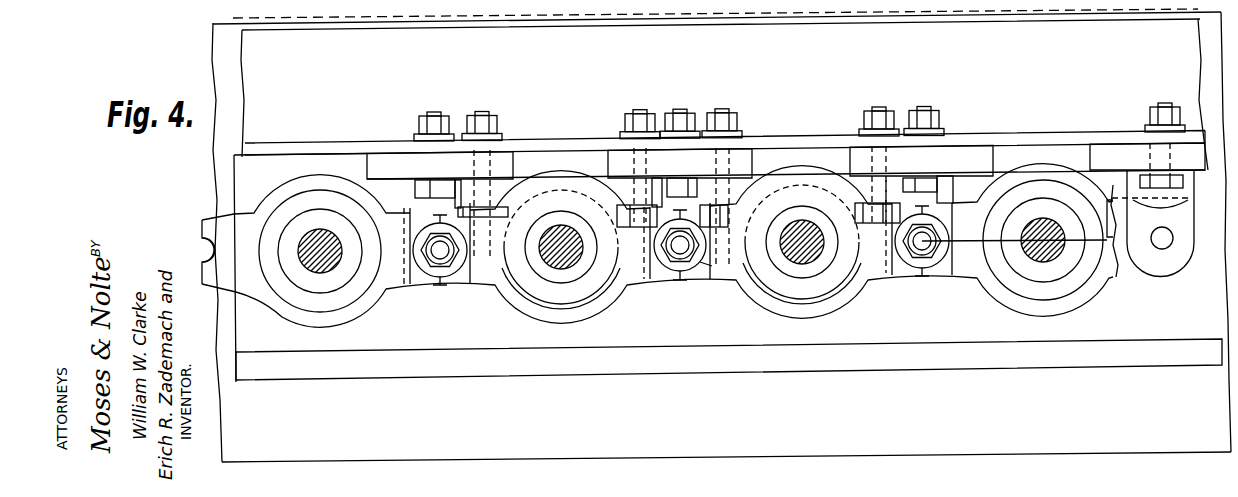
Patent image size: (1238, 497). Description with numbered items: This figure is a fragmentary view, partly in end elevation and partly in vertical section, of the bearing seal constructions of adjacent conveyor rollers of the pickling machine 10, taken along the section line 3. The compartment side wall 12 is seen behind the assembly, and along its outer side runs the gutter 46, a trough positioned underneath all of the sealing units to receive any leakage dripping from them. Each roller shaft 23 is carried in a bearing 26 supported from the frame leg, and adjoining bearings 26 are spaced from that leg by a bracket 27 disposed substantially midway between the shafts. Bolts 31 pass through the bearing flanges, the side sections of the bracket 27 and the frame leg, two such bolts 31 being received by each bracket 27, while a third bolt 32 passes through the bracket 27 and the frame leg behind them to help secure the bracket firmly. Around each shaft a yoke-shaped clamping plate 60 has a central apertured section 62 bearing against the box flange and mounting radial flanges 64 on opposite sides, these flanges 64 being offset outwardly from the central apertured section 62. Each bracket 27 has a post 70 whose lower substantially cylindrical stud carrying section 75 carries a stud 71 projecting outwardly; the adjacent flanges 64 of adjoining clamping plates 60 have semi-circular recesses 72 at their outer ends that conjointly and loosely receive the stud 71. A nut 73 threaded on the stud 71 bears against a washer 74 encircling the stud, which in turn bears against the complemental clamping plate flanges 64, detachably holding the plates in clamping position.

The section line 3- 3 is at (233, 18).
The pickling machine 10 is at (213, 318).
The side wall 12 is at (224, 444).
The roller shaft 23 is at (334, 262).
The bearing 26 is at (550, 292).
The bracket 27 is at (363, 165).
The bolt 31 is at (483, 115).
The third bolt 32 is at (434, 115).
The gutter 46 is at (696, 366).
The clamping plate 60 is at (272, 312).
The central apertured section 62 is at (282, 212).
The mounting radial flange 64 is at (212, 222).
The post 70 is at (402, 240).
The stud 71 is at (436, 252).
The semi-circular recess 72 is at (203, 246).
The nut 73 is at (667, 268).
The washer 74 is at (657, 240).
The cylindrical stud carrying section 75 is at (1153, 267).